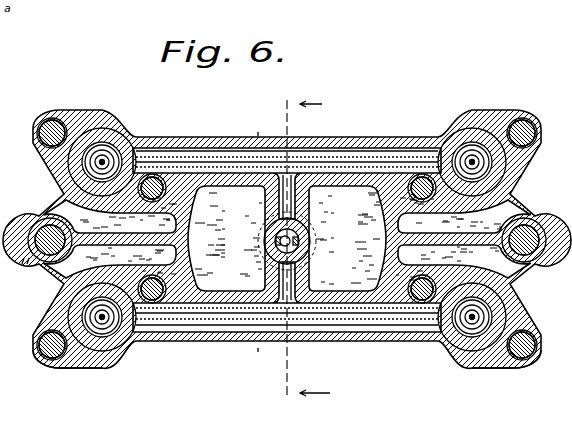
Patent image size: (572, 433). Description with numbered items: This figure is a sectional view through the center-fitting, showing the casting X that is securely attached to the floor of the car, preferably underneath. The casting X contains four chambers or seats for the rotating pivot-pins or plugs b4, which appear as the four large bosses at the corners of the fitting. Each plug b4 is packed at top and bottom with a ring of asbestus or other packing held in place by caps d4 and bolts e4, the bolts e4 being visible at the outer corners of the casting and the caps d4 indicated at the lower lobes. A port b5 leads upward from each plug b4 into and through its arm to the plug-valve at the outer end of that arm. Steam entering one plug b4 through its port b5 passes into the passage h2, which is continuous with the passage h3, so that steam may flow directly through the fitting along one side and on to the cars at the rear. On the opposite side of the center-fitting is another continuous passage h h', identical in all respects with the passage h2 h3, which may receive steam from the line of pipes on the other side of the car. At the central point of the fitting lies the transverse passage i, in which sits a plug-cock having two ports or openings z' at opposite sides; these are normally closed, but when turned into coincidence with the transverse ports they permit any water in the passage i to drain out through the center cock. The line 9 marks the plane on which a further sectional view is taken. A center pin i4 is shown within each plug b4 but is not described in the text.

The passage h' is at (287, 132).
The passage h is at (287, 138).
The passage h2 is at (287, 316).
The passage h3 is at (287, 315).
The rotating pivot-pin or plug b4 is at (67, 173).
The pin i4 is at (287, 239).
The bolt e4 is at (40, 147).
The port b5 is at (145, 177).
The cap d4 is at (70, 368).
The port or opening z' is at (296, 241).
The transverse passage i is at (287, 240).
The section line 9 9 is at (306, 250).
The casting X is at (293, 240).